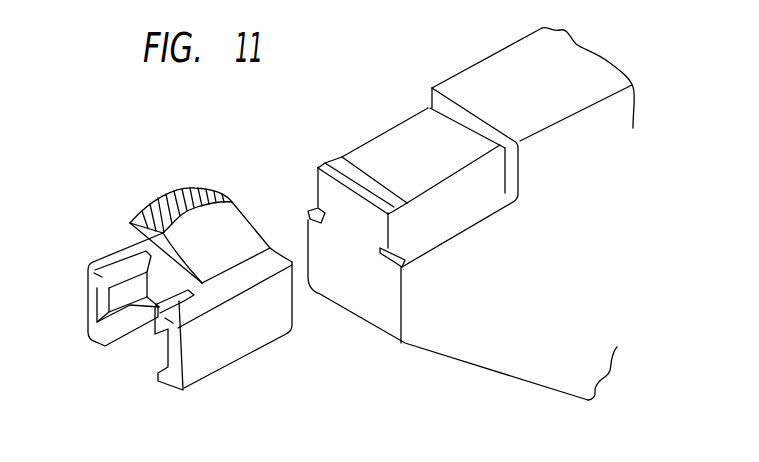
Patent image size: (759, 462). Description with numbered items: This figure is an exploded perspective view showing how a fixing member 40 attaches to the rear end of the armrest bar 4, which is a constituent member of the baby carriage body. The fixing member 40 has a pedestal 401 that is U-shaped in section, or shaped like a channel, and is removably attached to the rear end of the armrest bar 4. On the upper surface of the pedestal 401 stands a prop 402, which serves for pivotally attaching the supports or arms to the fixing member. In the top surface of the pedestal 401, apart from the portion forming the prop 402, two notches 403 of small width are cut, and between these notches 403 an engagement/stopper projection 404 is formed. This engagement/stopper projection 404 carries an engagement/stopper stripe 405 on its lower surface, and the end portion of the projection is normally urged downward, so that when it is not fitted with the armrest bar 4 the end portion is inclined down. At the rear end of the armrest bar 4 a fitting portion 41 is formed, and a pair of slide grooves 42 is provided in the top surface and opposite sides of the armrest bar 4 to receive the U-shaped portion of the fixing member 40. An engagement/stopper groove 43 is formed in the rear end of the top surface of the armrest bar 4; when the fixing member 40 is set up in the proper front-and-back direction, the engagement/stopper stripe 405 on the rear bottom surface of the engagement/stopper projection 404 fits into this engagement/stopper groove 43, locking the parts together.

The armrest bar 4 is at (555, 262).
The fixing member 40 is at (145, 190).
The fitting portion 41 is at (402, 135).
The slide grooves 42 is at (317, 222).
The engagement/stopper groove 43 is at (337, 163).
The pedestal 401 is at (255, 323).
The prop 402 is at (212, 218).
The notches 403 is at (130, 277).
The engagement/stopper projection 404 is at (152, 296).
The engagement/stopper stripe 405 is at (157, 333).